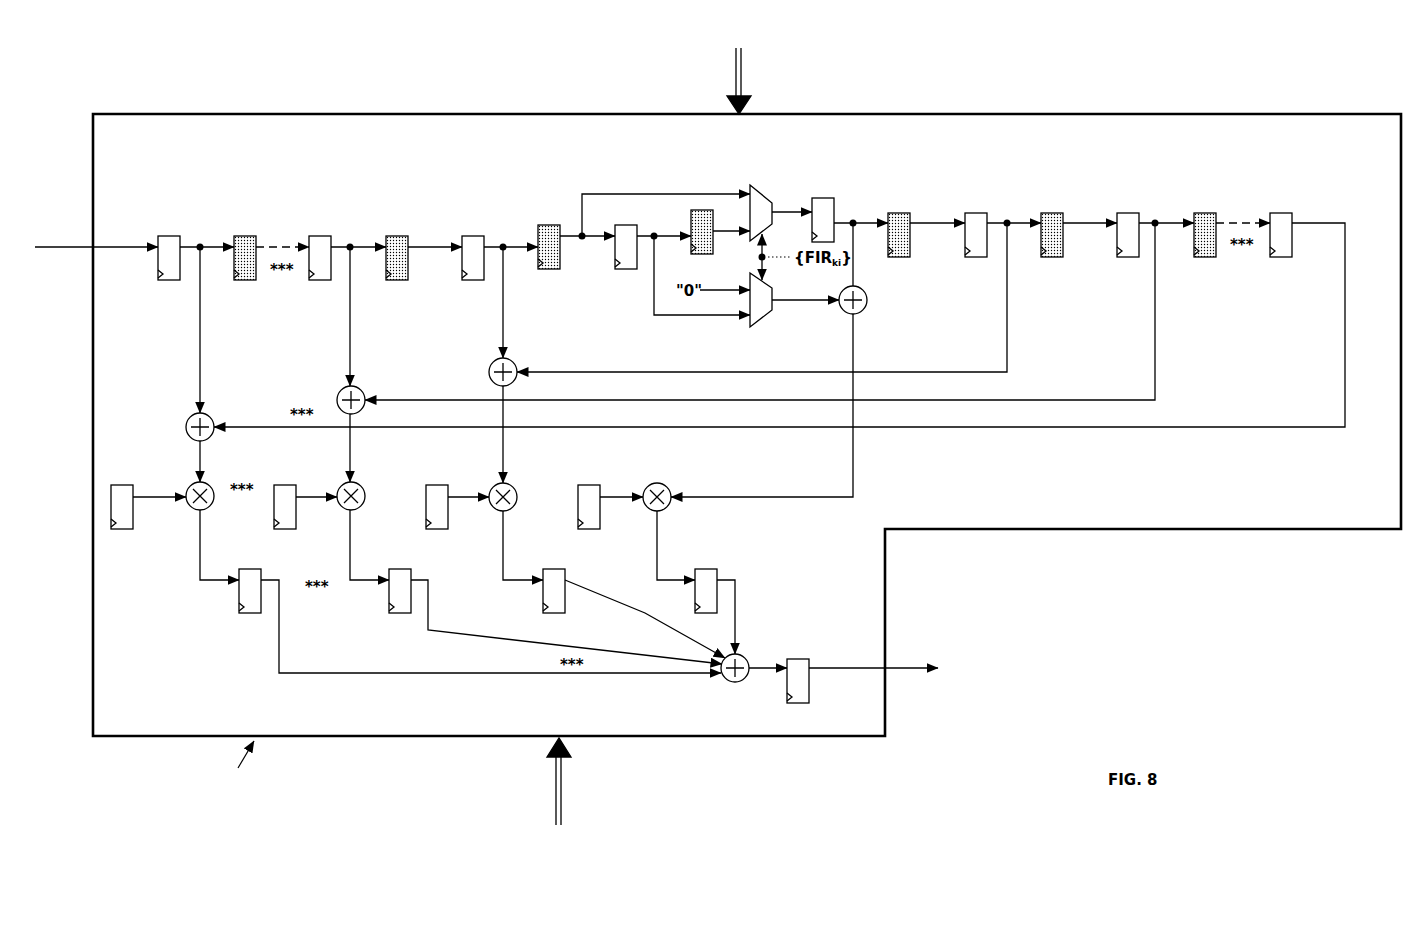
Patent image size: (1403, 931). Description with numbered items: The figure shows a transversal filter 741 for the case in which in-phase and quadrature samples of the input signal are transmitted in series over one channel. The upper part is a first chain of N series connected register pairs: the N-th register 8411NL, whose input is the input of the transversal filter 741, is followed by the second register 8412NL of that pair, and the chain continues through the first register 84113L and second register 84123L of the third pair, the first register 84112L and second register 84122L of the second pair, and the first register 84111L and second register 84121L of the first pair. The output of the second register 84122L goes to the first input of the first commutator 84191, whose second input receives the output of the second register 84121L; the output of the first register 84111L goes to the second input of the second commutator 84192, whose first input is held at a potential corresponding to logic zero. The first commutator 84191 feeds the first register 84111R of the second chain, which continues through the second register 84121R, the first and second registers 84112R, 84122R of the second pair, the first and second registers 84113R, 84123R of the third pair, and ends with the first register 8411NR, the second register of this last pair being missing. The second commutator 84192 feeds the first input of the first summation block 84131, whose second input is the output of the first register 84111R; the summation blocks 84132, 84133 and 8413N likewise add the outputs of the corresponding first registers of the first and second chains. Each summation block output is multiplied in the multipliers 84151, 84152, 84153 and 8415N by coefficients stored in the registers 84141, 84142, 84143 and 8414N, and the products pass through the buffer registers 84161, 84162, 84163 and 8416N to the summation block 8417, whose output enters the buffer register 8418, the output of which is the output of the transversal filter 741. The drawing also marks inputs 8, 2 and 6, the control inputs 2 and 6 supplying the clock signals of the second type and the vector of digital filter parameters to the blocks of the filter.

The transversal filter 741 is at (1295, 110).
The power input port 8 is at (732, 86).
The clock input port 2 is at (234, 758).
The FIR coefficient input port 6 is at (568, 787).
The N-th register of first chain 8411NL is at (171, 235).
The second register of N-th pair of first chain 8412NL is at (248, 281).
The first register of third pair of first chain 84113L is at (323, 235).
The second register of third pair of first chain 84123L is at (398, 281).
The first register of second pair of first chain 84112L is at (476, 235).
The second register of second pair of first chain 84122L is at (548, 270).
The first register of first pair of first chain 84111L is at (630, 224).
The second register of first pair of first chain 84121L is at (703, 256).
The first commutator 84191 is at (776, 205).
The second commutator 84192 is at (754, 326).
The first register of first pair of second chain 84111R is at (826, 197).
The second register of first pair of second chain 84121R is at (897, 258).
The first register of second pair of second chain 84112R is at (977, 212).
The second register of second pair of second chain 84122R is at (1051, 258).
The first register of third pair of second chain 84113R is at (1131, 212).
The second register of third pair of second chain 84123R is at (1205, 258).
The first register of N-th pair of second chain 8411NR is at (1281, 212).
The first summation block 84131 is at (864, 311).
The summation block 84132 is at (512, 361).
The summation block 84133 is at (360, 389).
The summation block 8413N is at (209, 415).
The coefficient register 8414N is at (114, 484).
The coefficient register 84143 is at (291, 484).
The coefficient register 84142 is at (444, 484).
The coefficient register 84141 is at (587, 484).
The multiplier 8415N is at (200, 512).
The multiplier 84153 is at (351, 512).
The multiplier 84152 is at (503, 513).
The multiplier 84151 is at (656, 513).
The buffer register 8416N is at (250, 614).
The buffer register 84163 is at (401, 614).
The buffer register 84162 is at (566, 605).
The buffer register 84161 is at (722, 588).
The summation block 8417 is at (724, 682).
The buffer register 8418 is at (800, 704).